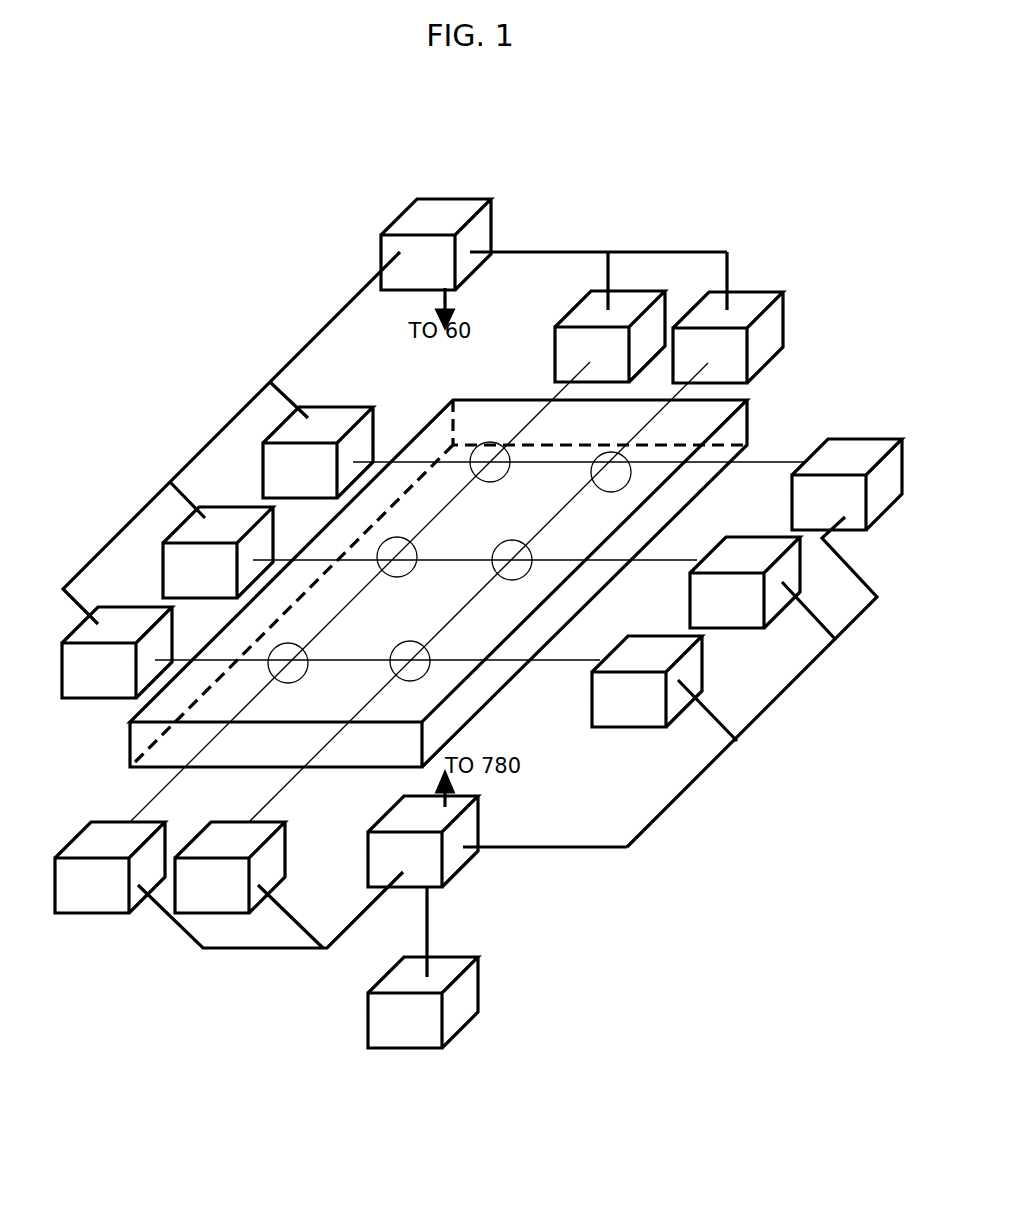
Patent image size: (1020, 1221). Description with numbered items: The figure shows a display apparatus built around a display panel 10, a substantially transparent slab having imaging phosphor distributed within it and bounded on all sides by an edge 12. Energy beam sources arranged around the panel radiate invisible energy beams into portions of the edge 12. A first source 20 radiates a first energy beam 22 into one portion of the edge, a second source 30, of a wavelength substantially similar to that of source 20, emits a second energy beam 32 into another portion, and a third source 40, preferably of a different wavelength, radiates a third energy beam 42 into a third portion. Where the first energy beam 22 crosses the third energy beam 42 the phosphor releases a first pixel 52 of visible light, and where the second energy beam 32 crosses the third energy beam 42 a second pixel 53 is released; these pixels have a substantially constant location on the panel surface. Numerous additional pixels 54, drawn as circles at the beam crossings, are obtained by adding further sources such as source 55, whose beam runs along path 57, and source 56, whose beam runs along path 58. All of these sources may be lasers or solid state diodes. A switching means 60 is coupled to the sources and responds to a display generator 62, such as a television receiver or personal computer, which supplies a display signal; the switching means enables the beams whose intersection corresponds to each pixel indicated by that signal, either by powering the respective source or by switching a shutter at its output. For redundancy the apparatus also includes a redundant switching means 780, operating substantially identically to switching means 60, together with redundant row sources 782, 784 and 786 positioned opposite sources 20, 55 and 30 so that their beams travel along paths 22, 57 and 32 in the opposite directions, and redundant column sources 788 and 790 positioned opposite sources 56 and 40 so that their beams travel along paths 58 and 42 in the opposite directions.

The display panel 10 is at (512, 400).
The edge 12 is at (128, 752).
The first source 20 is at (764, 643).
The first energy beam 22 is at (733, 463).
The second source 30 is at (664, 688).
The second energy beam 32 is at (553, 662).
The third source 40 is at (229, 885).
The third energy beam 42 is at (157, 770).
The first pixel 52 is at (448, 405).
The second pixel 53 is at (278, 640).
The additional pixels 54 is at (596, 457).
The additional source 55 is at (763, 588).
The additional source 56 is at (249, 885).
The path 57 is at (642, 563).
The path 58 is at (283, 776).
The switching means 60 is at (497, 875).
The display generator 62 is at (423, 1002).
The redundant switching means 780 is at (395, 411).
The redundant row source 782 is at (318, 440).
The redundant row source 784 is at (218, 540).
The redundant row source 786 is at (117, 652).
The redundant column source 788 is at (728, 337).
The redundant column source 790 is at (610, 336).